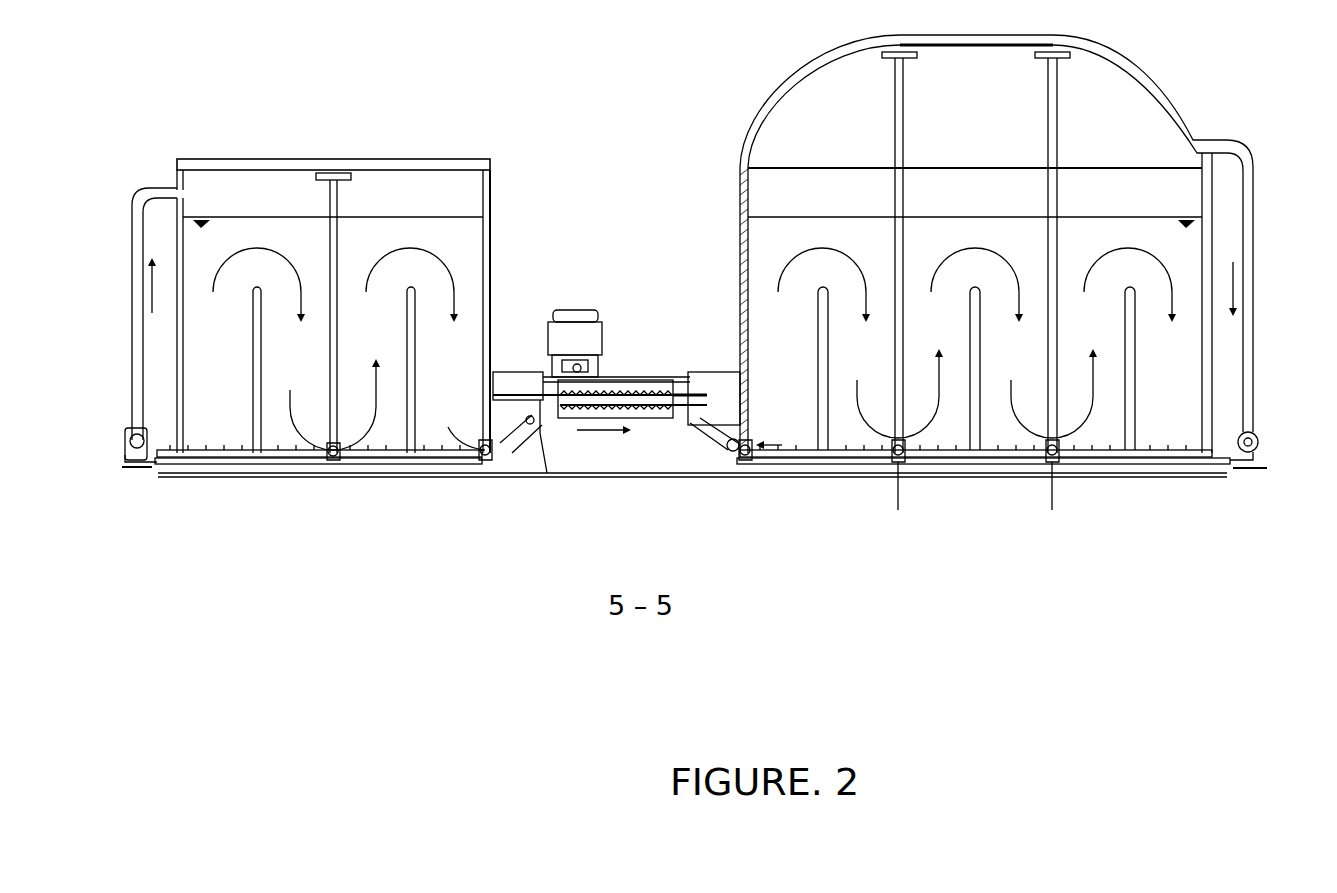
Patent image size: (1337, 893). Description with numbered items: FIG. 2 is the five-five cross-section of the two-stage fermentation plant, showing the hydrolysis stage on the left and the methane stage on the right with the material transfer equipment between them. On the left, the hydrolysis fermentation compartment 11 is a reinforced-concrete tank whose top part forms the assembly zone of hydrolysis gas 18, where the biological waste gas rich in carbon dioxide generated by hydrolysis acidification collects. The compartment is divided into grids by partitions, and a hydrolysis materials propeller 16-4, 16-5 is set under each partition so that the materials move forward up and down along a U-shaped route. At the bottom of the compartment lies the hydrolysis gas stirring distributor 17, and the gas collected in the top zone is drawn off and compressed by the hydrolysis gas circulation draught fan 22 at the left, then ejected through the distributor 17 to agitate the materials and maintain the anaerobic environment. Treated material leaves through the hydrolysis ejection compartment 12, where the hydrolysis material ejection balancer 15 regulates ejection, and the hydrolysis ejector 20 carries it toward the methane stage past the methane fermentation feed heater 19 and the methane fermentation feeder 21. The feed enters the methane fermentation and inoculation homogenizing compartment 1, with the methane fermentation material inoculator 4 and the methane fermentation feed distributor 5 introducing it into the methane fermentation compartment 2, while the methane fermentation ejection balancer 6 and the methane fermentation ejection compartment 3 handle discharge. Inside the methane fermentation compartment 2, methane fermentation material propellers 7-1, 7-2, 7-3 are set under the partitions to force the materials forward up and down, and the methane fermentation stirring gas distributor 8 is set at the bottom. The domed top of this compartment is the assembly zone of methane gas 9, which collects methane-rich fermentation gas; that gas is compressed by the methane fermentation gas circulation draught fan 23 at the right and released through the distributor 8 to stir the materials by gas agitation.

The methane fermentation and inoculation homogenizing compartment 1 is at (713, 380).
The methane fermentation compartment 2 is at (780, 257).
The methane fermentation ejection compartment 3 is at (544, 433).
The methane fermentation material inoculator 4 is at (697, 424).
The methane fermentation feed distributor 5 is at (710, 437).
The methane fermentation ejection balancer 6 is at (730, 442).
The methane fermentation material propeller 7-1 is at (745, 460).
The methane fermentation material propeller 7-2 is at (897, 462).
The methane fermentation material propeller 7-3 is at (1050, 462).
The methane fermentation stirring gas distributor 8 is at (948, 452).
The assembly zone of methane gas 9 is at (818, 133).
The hydrolysis fermentation compartment 11 is at (453, 257).
The hydrolysis ejection compartment 12 is at (513, 380).
The hydrolysis material ejection balancer 15 is at (510, 463).
The hydrolysis materials propeller 16-4 is at (337, 456).
The hydrolysis materials propeller 16-5 is at (485, 460).
The hydrolysis gas stirring distributor 17 is at (287, 453).
The assembly zone of hydrolysis gas 18 is at (457, 203).
The methane fermentation feed heater 19 is at (637, 392).
The hydrolysis ejector 20 is at (608, 391).
The methane fermentation feeder 21 is at (657, 396).
The hydrolysis gas circulation draught fan 22 is at (130, 433).
The methane fermentation gas circulation draught fan 23 is at (1258, 436).